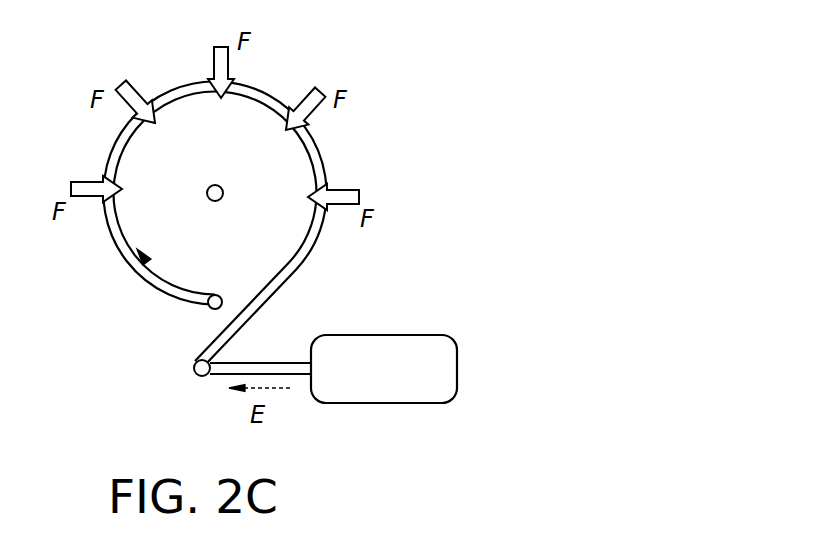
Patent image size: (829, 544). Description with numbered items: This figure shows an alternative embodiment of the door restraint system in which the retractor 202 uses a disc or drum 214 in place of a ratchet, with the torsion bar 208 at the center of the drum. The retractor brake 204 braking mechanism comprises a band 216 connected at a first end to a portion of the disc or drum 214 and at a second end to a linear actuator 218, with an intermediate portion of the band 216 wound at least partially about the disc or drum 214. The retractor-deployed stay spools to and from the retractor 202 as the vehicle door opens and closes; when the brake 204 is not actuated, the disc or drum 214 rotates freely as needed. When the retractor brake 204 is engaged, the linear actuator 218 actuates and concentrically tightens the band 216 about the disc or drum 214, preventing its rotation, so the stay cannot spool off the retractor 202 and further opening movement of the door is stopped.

The retractor 202 is at (133, 272).
The retractor brake 204 is at (381, 370).
The torsion bar 208 is at (223, 193).
The disc or drum 214 is at (249, 115).
The band 216 is at (310, 247).
The linear actuator 218 is at (385, 383).